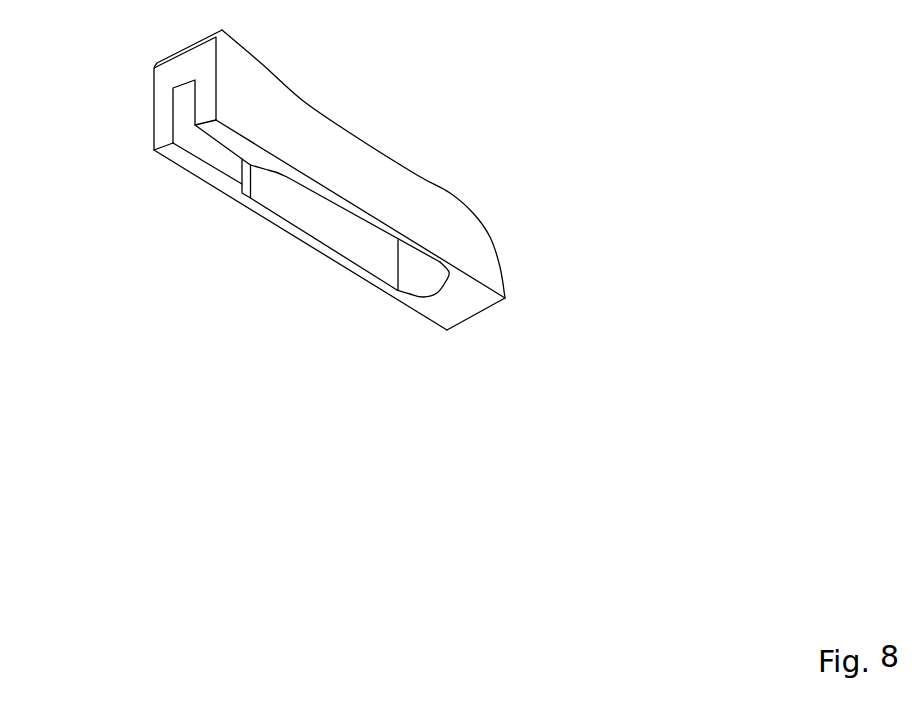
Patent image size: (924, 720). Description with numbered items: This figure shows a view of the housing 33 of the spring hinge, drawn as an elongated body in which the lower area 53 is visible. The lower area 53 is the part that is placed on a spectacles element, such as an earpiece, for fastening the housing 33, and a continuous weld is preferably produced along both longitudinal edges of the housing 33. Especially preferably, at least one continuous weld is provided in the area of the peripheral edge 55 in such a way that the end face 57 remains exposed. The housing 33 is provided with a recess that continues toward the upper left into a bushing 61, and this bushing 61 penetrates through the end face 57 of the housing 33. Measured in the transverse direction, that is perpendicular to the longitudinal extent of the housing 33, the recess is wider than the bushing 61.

The housing 33 is at (363, 158).
The end face 57 is at (166, 83).
The bushing 61 is at (203, 147).
The peripheral edge 55 is at (337, 235).
The lower area 53 is at (431, 317).